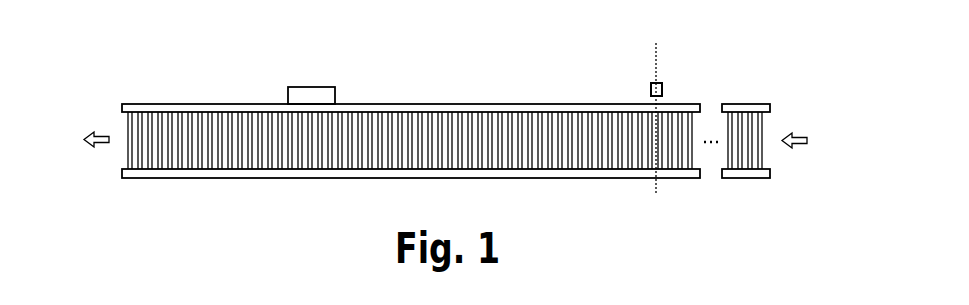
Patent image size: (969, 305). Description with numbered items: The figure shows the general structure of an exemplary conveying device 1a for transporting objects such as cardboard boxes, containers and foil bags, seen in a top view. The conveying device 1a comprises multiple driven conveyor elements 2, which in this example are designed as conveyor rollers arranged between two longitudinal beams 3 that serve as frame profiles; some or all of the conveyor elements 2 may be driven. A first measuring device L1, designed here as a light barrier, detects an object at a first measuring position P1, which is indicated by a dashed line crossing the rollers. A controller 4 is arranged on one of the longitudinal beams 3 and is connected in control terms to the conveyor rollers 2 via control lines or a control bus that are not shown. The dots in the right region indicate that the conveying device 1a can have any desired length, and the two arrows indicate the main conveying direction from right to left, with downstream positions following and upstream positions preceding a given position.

The conveying device 1a is at (465, 94).
The conveyor elements 2 is at (437, 123).
The longitudinal beams 3 is at (352, 112).
The controller 4 is at (313, 95).
The first measuring position P1 is at (658, 102).
The first measuring device L1 is at (653, 83).